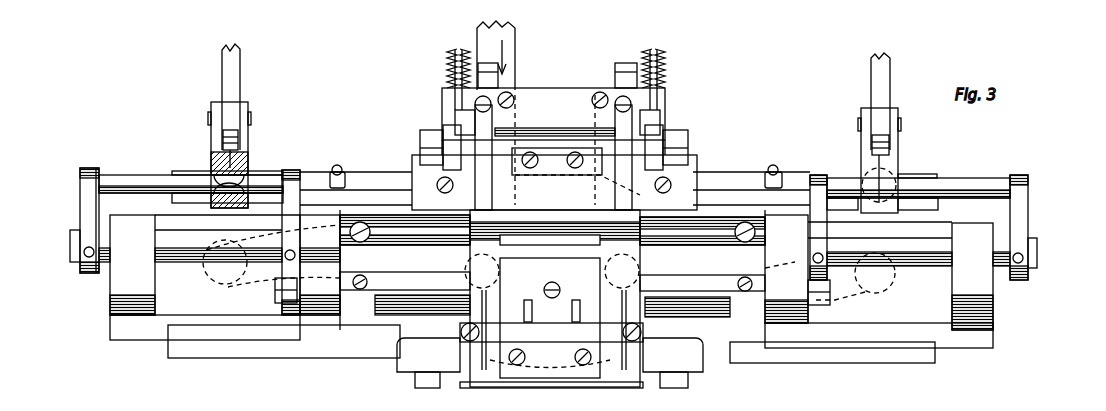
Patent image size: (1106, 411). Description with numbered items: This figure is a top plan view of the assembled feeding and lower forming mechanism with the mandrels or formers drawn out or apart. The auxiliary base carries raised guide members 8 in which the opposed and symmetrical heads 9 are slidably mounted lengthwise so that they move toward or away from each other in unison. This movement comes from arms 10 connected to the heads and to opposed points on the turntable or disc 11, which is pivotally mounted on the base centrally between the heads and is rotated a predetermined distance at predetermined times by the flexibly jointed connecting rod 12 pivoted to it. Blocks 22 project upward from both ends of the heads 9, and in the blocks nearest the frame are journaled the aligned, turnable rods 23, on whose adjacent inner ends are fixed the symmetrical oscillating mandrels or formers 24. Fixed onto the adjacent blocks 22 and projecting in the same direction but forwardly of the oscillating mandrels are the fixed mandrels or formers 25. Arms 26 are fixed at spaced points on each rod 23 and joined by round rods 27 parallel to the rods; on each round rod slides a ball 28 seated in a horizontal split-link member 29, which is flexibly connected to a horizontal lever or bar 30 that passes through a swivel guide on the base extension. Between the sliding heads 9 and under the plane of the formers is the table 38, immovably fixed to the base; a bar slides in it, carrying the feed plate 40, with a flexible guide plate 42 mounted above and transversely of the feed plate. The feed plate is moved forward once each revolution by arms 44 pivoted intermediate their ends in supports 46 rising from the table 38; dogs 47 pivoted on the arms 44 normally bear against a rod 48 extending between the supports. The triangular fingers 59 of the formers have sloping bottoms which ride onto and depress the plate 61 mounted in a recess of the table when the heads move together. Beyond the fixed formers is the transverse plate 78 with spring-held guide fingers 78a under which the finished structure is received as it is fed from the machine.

The raised guide members 8 is at (795, 183).
The heads 9 is at (148, 330).
The arms 10 is at (258, 280).
The turntable or disc 11 is at (537, 368).
The flexibly jointed connecting rod 12 is at (493, 33).
The blocks 22 is at (132, 273).
The rods 23 is at (190, 249).
The oscillating mandrels or formers 24 is at (388, 203).
The fixed mandrels or formers 25 is at (410, 316).
The arms 26 is at (89, 183).
The round rods 27 is at (133, 180).
The ball 28 is at (249, 165).
The split-link member 29 is at (245, 132).
The horizontal lever or bar 30 is at (234, 72).
The table 38 is at (627, 312).
The feed plate 40 is at (547, 163).
The flexible guide plate 42 is at (550, 264).
The arms 44 is at (452, 135).
The supports 46 is at (465, 132).
The dogs 47 is at (487, 127).
The rod 48 is at (572, 137).
The fingers 59 is at (442, 257).
The plate 61 is at (536, 248).
The transverse plate 78 is at (552, 336).
The guide fingers 78a is at (530, 312).